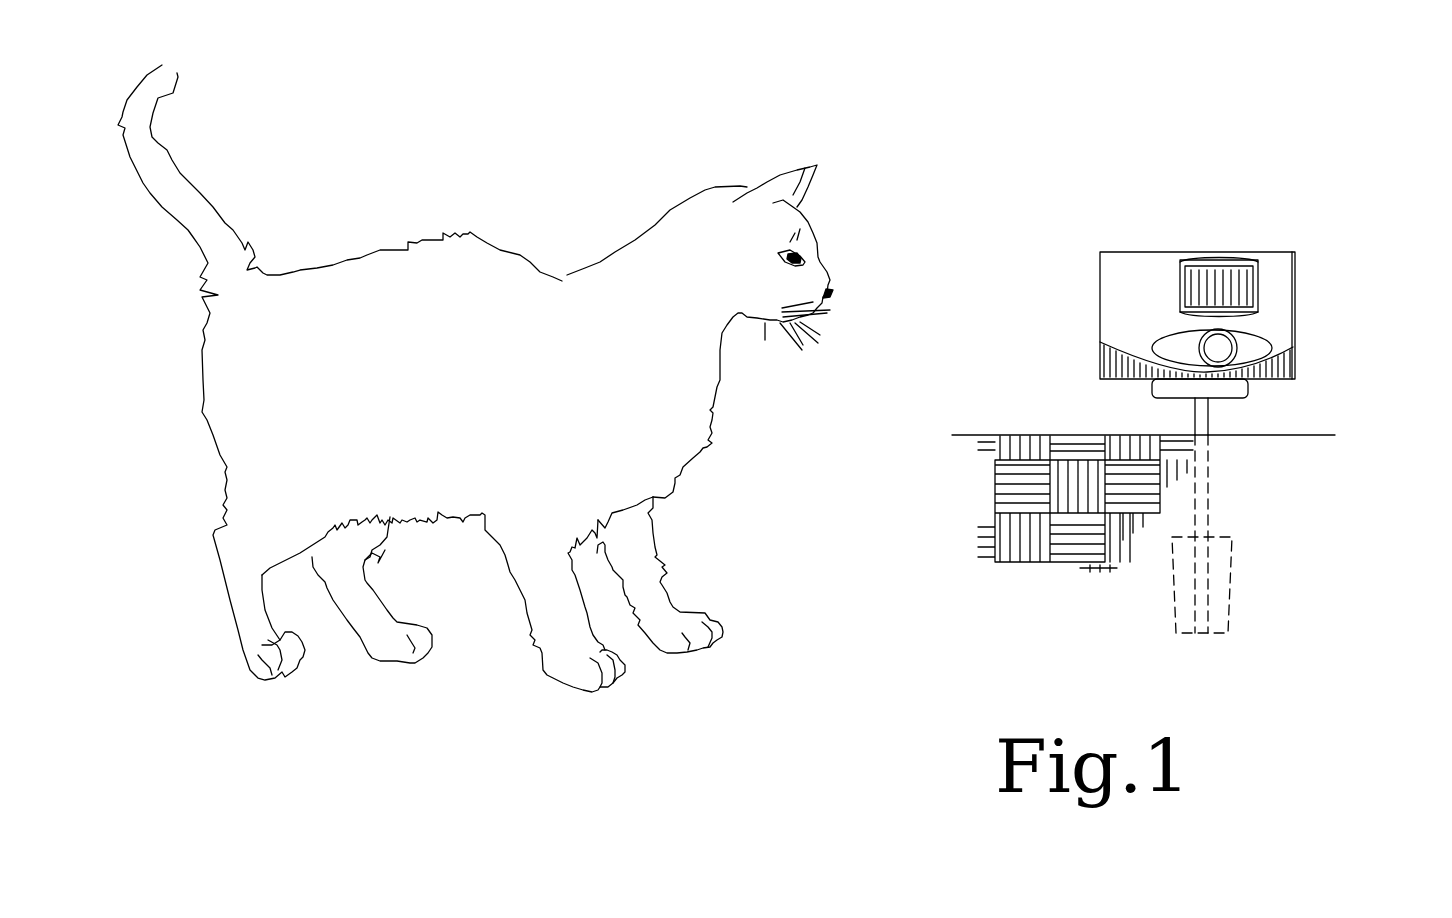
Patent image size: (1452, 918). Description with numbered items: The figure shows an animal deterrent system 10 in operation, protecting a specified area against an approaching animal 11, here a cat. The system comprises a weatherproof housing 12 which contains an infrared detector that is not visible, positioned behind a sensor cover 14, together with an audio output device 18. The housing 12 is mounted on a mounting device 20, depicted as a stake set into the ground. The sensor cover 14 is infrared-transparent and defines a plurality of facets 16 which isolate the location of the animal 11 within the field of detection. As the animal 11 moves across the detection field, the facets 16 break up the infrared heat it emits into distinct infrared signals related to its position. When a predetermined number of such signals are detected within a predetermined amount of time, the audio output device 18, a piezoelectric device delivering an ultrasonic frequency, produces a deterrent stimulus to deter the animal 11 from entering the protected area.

The animal deterrent system 10 is at (1303, 173).
The animal 11 is at (550, 652).
The weatherproof housing 12 is at (1286, 298).
The sensor cover 14 is at (1241, 281).
The facets 16 is at (1208, 277).
The audio output device 18 is at (1222, 346).
The mounting device 20 is at (1210, 414).